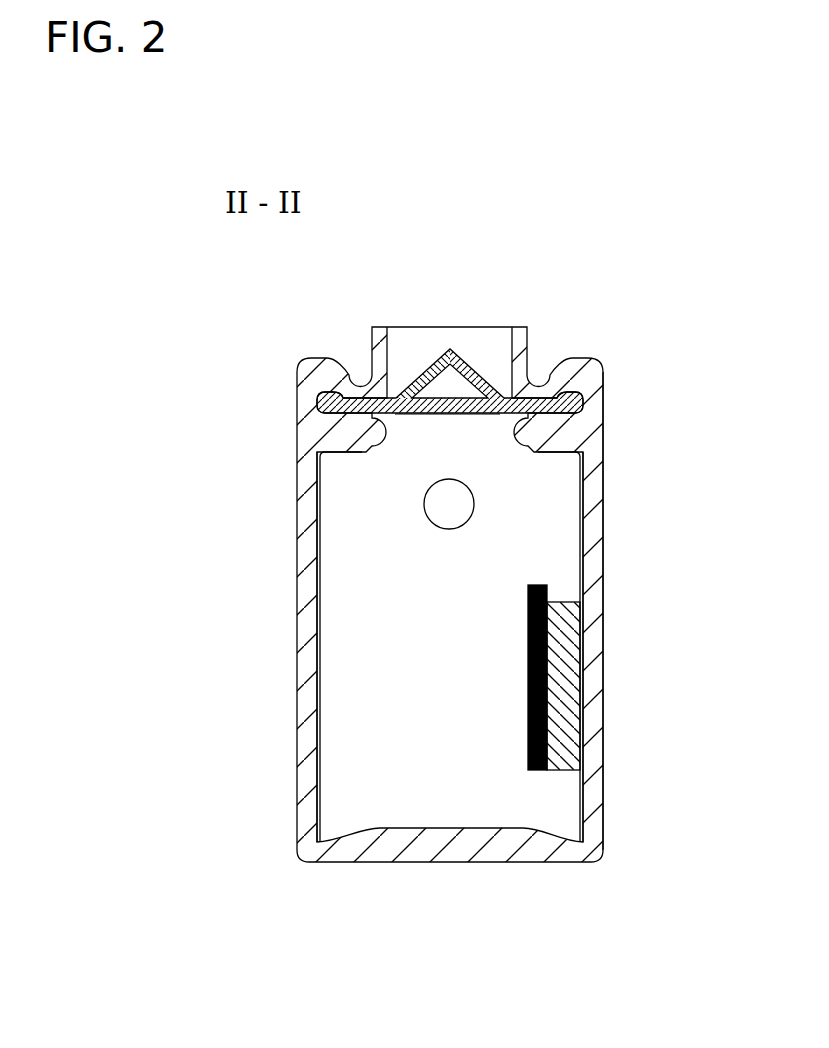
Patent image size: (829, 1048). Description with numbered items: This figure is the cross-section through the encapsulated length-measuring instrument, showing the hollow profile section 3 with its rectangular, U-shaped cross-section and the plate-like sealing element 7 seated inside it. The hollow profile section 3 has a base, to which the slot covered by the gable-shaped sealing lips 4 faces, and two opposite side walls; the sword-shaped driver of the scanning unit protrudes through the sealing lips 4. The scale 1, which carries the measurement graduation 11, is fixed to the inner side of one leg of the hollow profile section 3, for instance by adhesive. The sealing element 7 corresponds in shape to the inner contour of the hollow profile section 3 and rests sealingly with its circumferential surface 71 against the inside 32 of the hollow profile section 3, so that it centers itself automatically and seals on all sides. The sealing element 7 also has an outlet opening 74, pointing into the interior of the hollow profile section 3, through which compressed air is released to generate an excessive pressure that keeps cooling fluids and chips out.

The scale 1 is at (528, 638).
The measurement graduation 11 is at (514, 710).
The hollow profile section 3 is at (592, 808).
The inside of the hollow profile section 32 is at (332, 569).
The sealing lips 4 is at (480, 365).
The sealing element 7 is at (553, 470).
The circumferential surface 71 is at (598, 531).
The outlet opening 74 is at (435, 505).